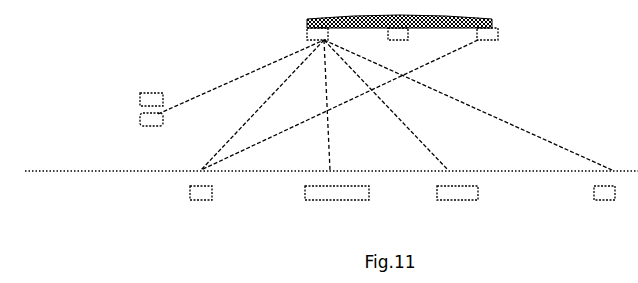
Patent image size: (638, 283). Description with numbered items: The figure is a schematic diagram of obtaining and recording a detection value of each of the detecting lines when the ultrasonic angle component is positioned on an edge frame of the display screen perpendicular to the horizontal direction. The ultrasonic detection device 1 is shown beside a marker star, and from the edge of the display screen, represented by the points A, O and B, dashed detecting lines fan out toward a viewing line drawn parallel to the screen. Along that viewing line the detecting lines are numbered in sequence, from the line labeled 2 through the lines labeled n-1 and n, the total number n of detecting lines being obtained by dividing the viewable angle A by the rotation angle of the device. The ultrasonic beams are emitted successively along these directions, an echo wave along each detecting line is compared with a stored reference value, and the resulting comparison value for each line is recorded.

The viewable angle A is at (317, 34).
The array center point O is at (398, 34).
The array end point B is at (487, 34).
The ultrasonic detection device 1 is at (151, 99).
The reference point star is at (232, 83).
The measurement point 2 is at (201, 193).
The measurement point n-1 is at (457, 193).
The number of detecting lines n is at (604, 193).